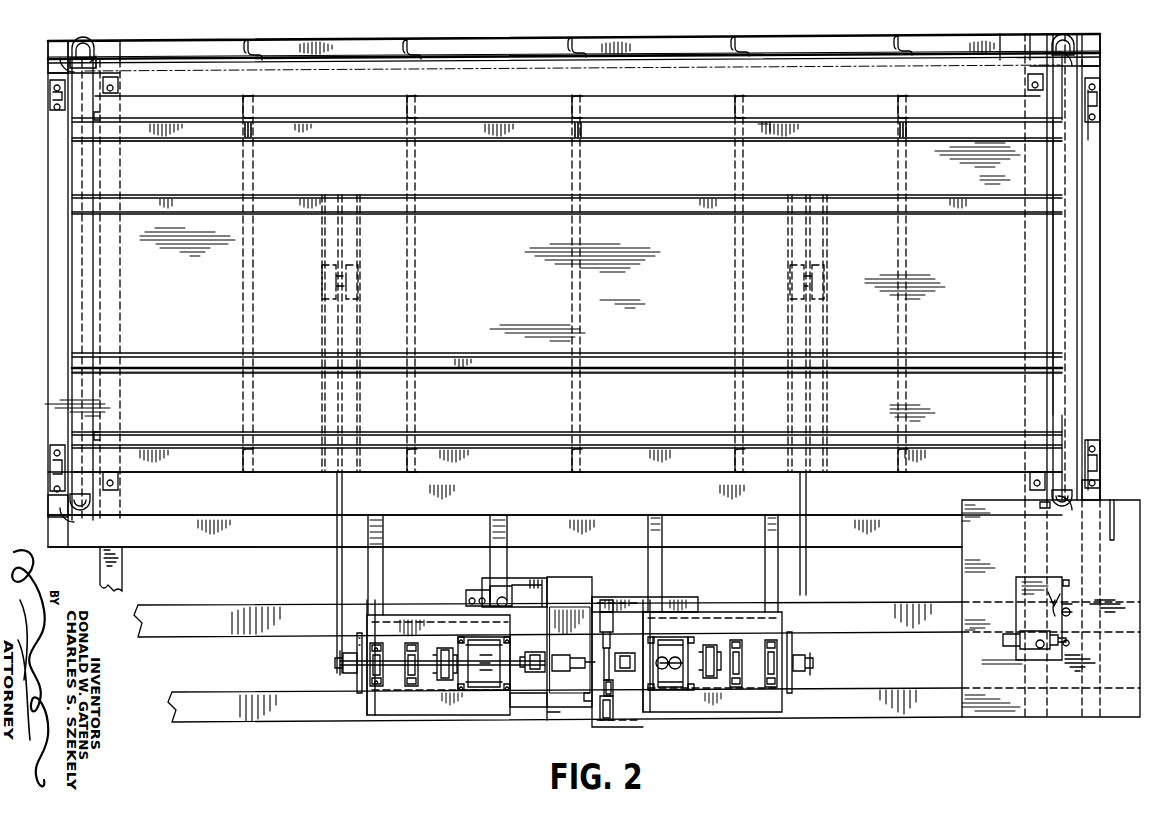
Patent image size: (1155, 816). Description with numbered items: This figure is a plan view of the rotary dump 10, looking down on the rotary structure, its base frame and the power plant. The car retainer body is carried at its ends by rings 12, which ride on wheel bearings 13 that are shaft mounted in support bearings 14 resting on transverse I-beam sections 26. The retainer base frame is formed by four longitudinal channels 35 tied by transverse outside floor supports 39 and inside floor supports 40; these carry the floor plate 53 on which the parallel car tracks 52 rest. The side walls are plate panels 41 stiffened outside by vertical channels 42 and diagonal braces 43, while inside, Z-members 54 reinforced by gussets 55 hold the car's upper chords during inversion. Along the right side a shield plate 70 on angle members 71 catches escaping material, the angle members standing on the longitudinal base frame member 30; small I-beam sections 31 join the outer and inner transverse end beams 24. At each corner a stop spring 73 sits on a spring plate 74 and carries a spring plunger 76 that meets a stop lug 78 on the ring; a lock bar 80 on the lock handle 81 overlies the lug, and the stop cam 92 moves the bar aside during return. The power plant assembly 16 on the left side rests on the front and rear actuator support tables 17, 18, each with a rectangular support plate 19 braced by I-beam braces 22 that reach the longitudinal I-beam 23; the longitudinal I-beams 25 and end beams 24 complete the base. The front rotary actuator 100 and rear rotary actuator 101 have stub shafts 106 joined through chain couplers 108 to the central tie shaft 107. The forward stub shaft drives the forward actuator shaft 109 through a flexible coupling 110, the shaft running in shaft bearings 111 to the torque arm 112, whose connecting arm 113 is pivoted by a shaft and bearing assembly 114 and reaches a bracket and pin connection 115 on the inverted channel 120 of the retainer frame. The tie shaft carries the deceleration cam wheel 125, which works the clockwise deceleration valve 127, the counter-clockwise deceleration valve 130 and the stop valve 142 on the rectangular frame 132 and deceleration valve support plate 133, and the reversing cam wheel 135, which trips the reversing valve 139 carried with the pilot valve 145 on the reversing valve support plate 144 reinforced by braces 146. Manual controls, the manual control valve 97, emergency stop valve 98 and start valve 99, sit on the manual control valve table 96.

The rotary dump 10 is at (494, 32).
The rings 12 is at (1088, 233).
The wheel bearings 13 is at (1090, 128).
The support bearings 14 is at (50, 96).
The power plant assembly 16 is at (599, 575).
The front actuator support table 17 is at (741, 712).
The rear actuator support table 18 is at (397, 724).
The rectangular support plate 19 is at (370, 604).
The I-beam braces 22 is at (381, 516).
The I-beam 23 is at (904, 514).
The transversely extending I-beams 24 is at (120, 48).
The longitudinally extending I-beams 25 is at (189, 615).
The I-beam sections 26 is at (55, 146).
The I-beam base frame member 30 is at (339, 39).
The I-beam sections 31 is at (90, 44).
The channels 35 is at (1080, 345).
The outside floor supports 39 is at (578, 170).
The inside floor supports 40 is at (417, 255).
The plate panels 41 is at (770, 122).
The channels 42 is at (253, 101).
The diagonal braces 43 is at (475, 106).
The car tracks 52 is at (982, 198).
The floor plate 53 is at (662, 326).
The car retainer Z-members 54 is at (658, 146).
The gussets 55 is at (251, 132).
The shield plate 70 is at (648, 59).
The angle members 71 is at (249, 42).
The stop spring 73 is at (98, 50).
The spring plate 74 is at (64, 56).
The spring plunger 76 is at (76, 56).
The stop lug 78 is at (80, 509).
The lock bar 80 is at (1100, 500).
The lock handle 81 is at (1112, 532).
The stop cam 92 is at (1038, 510).
The manual control valve table 96 is at (1020, 595).
The manual control valve 97 is at (1008, 648).
The emergency stop valve 98 is at (1076, 599).
The start valve 99 is at (1072, 579).
The front rotary actuator 100 is at (671, 663).
The rear rotary actuator 101 is at (490, 690).
The stub shafts 106 is at (462, 635).
The central tie shaft 107 is at (570, 669).
The chain couplers 108 is at (553, 656).
The forward actuator shaft 109 is at (380, 643).
The flexible coupling 110 is at (447, 682).
The shaft bearings 111 is at (378, 686).
The torque arm 112 is at (357, 690).
The connecting arm 113 is at (336, 488).
The shaft and shaft bearing assembly 114 is at (336, 668).
The bracket and pin connection 115 is at (322, 271).
The inverted channel 120 is at (321, 230).
The deceleration cam wheel 125 is at (602, 654).
The clockwise deceleration valve 127 is at (606, 600).
The counter-clockwise deceleration valve 130 is at (604, 714).
The rectangular frame 132 is at (590, 700).
The deceleration valve support plate 133 is at (668, 596).
The reversing cam wheel 135 is at (550, 630).
The reversing valve 139 is at (545, 716).
The stop valve 142 is at (614, 686).
The reversing valve support plate 144 is at (510, 586).
The pilot valve 145 is at (486, 583).
The braces 146 is at (528, 700).